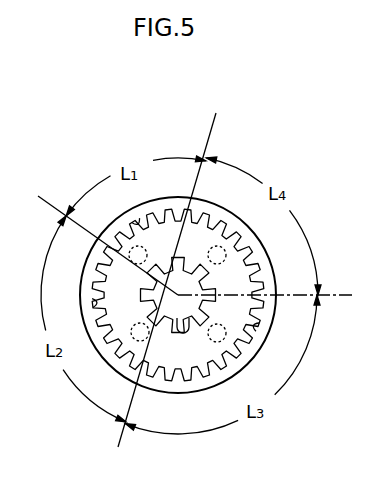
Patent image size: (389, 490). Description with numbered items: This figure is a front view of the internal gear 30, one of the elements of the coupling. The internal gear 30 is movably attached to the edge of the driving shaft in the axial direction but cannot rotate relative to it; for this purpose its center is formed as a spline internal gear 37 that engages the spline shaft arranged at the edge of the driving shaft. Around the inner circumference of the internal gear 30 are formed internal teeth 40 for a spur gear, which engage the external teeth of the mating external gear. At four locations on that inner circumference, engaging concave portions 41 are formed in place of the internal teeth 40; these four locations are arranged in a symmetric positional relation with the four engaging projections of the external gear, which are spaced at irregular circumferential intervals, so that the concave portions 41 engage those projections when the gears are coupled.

The internal gear 30 is at (108, 367).
The spline internal gear 37 is at (190, 330).
The internal teeth 40 is at (134, 220).
The engaging concave portions 41 is at (186, 215).